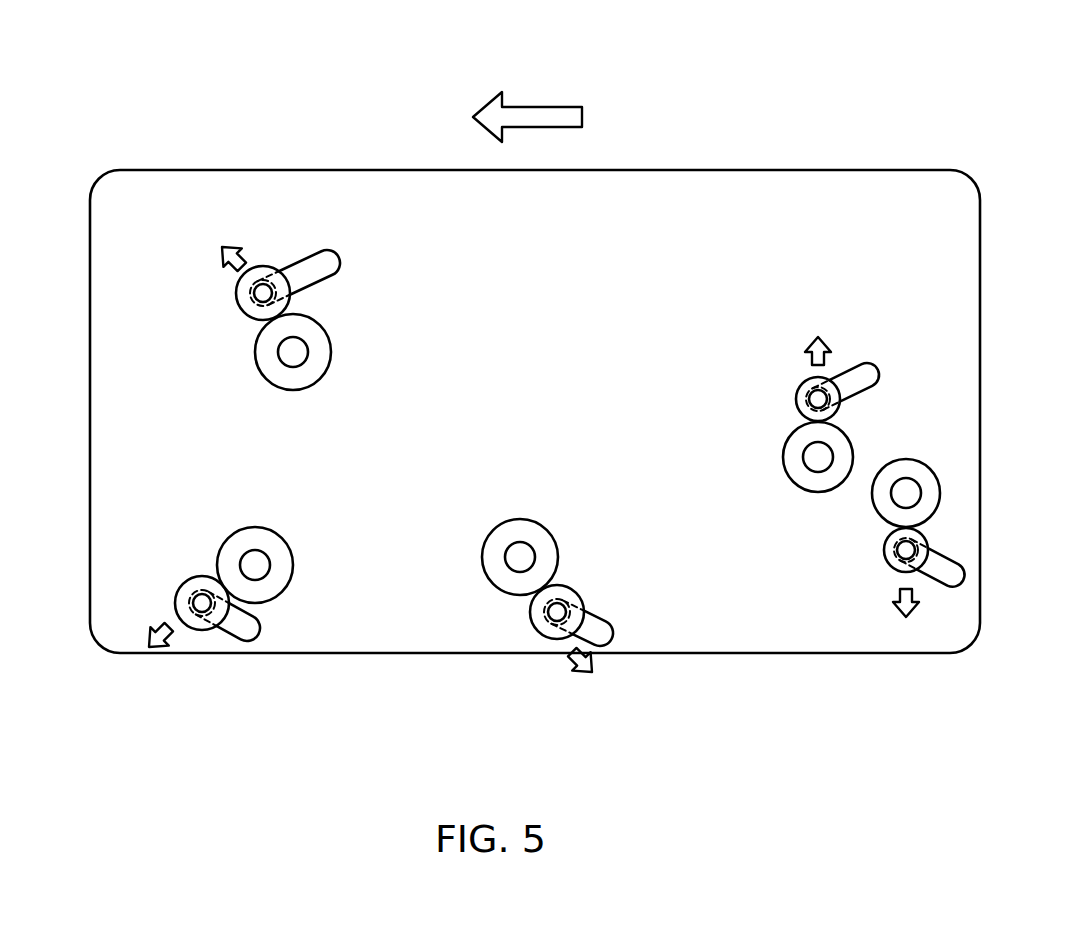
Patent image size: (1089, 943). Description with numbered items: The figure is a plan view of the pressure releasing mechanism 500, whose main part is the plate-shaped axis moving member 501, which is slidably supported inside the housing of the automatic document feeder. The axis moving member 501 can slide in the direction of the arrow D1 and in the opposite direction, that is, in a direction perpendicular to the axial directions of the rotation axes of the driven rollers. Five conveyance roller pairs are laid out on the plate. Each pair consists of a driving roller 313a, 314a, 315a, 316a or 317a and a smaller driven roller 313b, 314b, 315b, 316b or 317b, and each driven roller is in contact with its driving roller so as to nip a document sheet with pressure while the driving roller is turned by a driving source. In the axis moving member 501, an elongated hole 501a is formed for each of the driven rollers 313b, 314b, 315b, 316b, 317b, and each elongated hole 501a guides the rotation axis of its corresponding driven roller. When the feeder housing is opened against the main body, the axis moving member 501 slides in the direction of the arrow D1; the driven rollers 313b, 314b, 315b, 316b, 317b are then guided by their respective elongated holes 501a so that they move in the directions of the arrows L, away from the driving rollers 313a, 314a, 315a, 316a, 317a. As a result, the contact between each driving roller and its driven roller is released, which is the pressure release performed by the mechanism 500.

The pressure releasing mechanism 500 is at (535, 358).
The axis moving member 501 is at (790, 168).
The elongated hole 501a is at (327, 258).
The driving roller 313a is at (317, 375).
The driven roller 313b is at (237, 303).
The driving roller 314a is at (283, 550).
The driven roller 314b is at (200, 625).
The driving roller 315a is at (523, 527).
The driven roller 315b is at (532, 620).
The driving roller 316a is at (930, 480).
The driven roller 316b is at (882, 550).
The driving roller 317a is at (795, 467).
The driven roller 317b is at (798, 402).
The arrow L is at (240, 240).
The arrow D1 is at (557, 107).